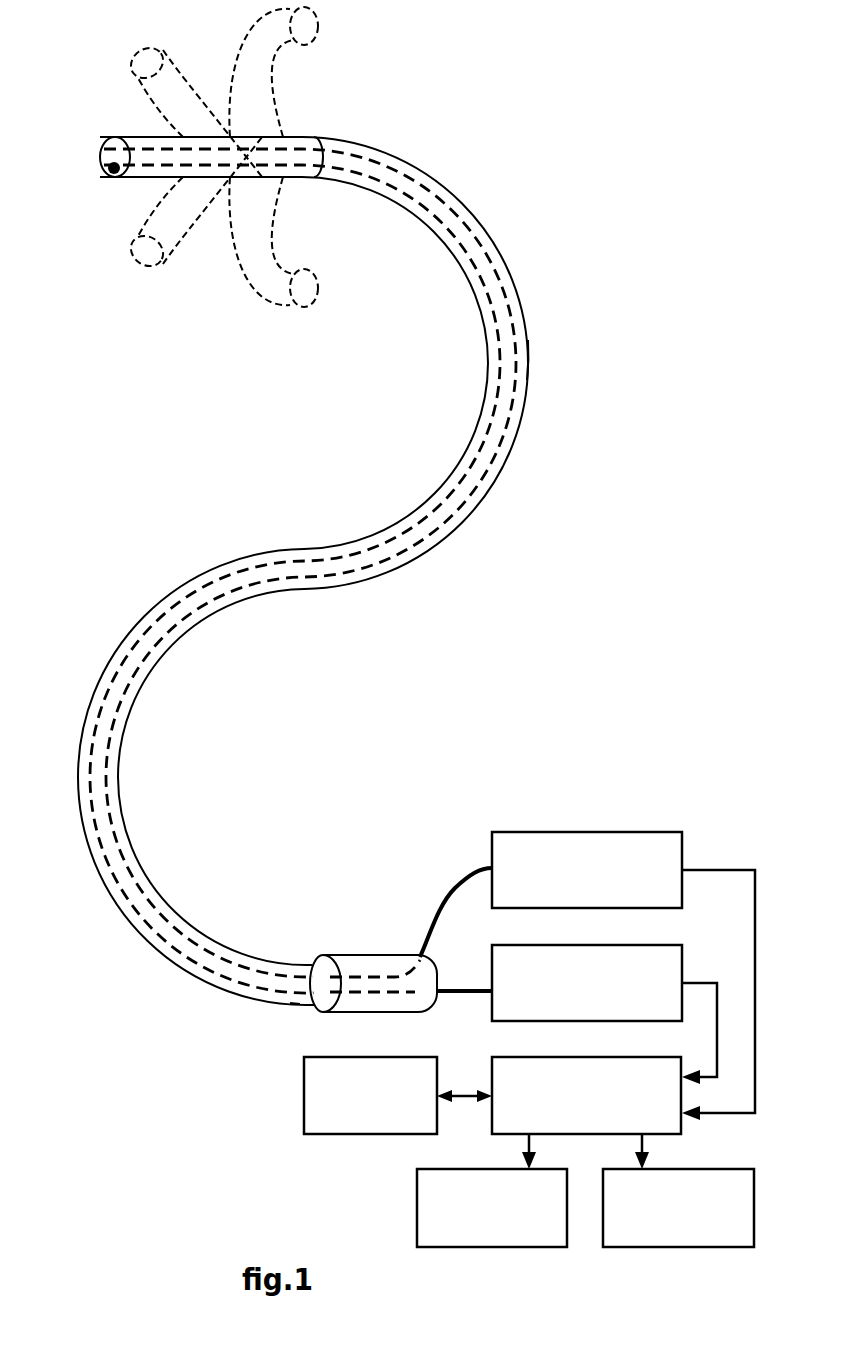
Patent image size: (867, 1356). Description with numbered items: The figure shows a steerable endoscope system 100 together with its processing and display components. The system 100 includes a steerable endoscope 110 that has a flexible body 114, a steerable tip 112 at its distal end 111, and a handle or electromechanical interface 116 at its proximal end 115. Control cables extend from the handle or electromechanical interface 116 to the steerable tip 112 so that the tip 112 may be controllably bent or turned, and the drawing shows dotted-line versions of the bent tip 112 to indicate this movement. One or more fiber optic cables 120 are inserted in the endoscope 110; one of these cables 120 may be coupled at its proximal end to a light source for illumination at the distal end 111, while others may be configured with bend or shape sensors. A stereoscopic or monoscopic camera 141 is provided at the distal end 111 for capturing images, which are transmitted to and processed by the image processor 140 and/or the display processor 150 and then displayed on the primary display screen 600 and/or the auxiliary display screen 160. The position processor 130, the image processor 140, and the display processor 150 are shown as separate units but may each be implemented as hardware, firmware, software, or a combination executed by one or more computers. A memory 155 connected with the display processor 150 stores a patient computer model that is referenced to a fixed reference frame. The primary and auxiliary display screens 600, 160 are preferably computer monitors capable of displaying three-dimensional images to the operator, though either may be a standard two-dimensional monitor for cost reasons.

The system 100 is at (690, 170).
The steerable endoscope 110 is at (222, 520).
The distal end 111 is at (113, 193).
The steerable tip 112 is at (140, 137).
The flexible body 114 is at (529, 352).
The proximal end 115 is at (265, 1019).
The handle or electromechanical interface 116 is at (375, 955).
The fiber optic cables 120 is at (405, 568).
The image capturing device 141 is at (106, 169).
The position processor 130 is at (615, 832).
The image processor 140 is at (615, 945).
The display processor 150 is at (611, 1057).
The memory 155 is at (406, 1057).
The primary display screen 600 is at (492, 1169).
The auxiliary display screen 160 is at (679, 1169).